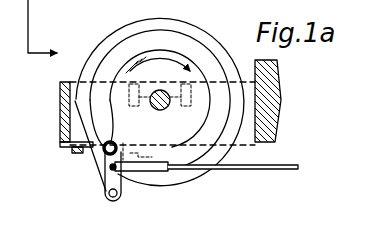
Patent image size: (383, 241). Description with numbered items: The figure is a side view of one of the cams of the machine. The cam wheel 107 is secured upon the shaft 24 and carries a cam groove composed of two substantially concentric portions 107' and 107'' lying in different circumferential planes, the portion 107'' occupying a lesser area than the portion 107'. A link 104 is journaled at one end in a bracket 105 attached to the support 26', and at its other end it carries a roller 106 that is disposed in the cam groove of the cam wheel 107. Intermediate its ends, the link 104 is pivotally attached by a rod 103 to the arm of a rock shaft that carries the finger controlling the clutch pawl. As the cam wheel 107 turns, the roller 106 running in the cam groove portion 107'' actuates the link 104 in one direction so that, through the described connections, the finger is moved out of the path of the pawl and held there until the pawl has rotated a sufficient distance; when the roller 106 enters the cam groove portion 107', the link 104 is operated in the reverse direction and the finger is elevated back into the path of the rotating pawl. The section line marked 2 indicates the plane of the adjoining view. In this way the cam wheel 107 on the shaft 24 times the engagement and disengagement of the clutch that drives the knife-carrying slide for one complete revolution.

The section line indicator 2 is at (49, 31).
The shaft 24 is at (168, 108).
The support 26' is at (285, 101).
The rod 103 is at (288, 163).
The link 104 is at (107, 178).
The bracket 105 is at (122, 197).
The roller 106 is at (117, 147).
The cam wheel 107 is at (153, 91).
The cam groove portion 107' is at (160, 85).
The cam groove portion 107'' is at (187, 181).